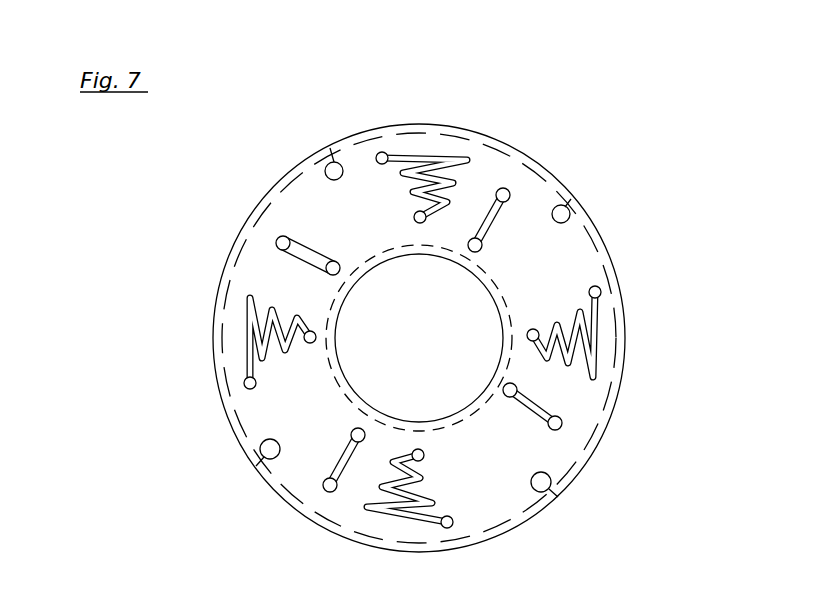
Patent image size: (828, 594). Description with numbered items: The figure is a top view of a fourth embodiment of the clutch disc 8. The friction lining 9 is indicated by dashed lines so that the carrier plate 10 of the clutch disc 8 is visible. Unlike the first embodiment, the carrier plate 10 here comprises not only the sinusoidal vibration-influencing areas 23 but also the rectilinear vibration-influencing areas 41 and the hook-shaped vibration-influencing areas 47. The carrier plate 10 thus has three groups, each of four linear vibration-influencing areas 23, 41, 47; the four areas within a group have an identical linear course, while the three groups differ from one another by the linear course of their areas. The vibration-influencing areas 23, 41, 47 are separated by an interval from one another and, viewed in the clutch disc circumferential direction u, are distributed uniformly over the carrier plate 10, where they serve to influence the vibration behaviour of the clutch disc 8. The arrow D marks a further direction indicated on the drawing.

The clutch disc 8 is at (638, 175).
The friction lining 9 is at (607, 420).
The carrier plate 10 is at (600, 250).
The sinusoidal vibration-influencing area 23 is at (402, 203).
The rectilinear vibration-influencing area 41 is at (322, 240).
The hook-shaped vibration-influencing area 47 is at (338, 133).
The rotation direction D is at (455, 98).
The clutch disc circumferential direction u is at (210, 207).